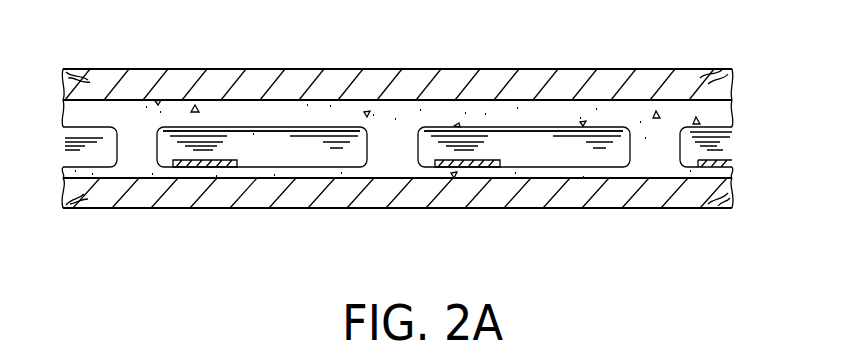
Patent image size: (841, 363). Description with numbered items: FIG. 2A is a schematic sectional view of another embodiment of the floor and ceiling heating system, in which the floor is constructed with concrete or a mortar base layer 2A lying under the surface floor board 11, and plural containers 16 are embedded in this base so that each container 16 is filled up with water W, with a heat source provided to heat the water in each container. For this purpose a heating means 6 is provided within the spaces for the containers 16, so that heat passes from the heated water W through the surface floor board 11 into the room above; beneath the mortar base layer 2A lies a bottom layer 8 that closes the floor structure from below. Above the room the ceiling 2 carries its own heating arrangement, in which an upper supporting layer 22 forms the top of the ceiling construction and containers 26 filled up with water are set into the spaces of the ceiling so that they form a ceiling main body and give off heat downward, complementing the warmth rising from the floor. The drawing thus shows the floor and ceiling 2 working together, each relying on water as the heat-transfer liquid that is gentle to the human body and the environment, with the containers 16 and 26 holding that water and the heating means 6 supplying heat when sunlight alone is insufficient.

The ceiling 2 is at (404, 143).
The bottom layer 8 is at (673, 193).
The surface floor board 11 is at (404, 54).
The upper supporting layer 22 is at (695, 75).
The container 16 is at (397, 87).
The container 26 is at (278, 138).
The water W is at (242, 142).
The heating means 6 is at (190, 162).
The mortar base layer 2A is at (398, 157).